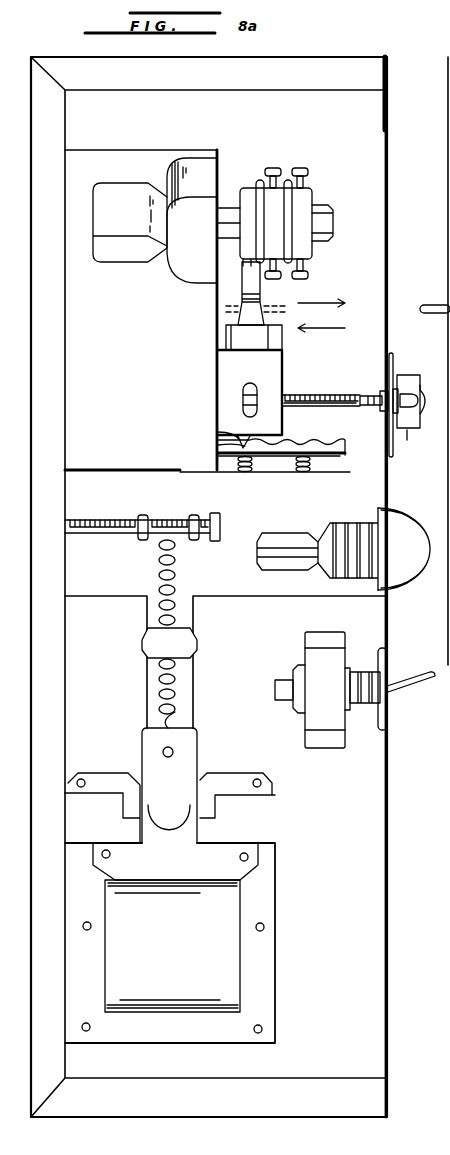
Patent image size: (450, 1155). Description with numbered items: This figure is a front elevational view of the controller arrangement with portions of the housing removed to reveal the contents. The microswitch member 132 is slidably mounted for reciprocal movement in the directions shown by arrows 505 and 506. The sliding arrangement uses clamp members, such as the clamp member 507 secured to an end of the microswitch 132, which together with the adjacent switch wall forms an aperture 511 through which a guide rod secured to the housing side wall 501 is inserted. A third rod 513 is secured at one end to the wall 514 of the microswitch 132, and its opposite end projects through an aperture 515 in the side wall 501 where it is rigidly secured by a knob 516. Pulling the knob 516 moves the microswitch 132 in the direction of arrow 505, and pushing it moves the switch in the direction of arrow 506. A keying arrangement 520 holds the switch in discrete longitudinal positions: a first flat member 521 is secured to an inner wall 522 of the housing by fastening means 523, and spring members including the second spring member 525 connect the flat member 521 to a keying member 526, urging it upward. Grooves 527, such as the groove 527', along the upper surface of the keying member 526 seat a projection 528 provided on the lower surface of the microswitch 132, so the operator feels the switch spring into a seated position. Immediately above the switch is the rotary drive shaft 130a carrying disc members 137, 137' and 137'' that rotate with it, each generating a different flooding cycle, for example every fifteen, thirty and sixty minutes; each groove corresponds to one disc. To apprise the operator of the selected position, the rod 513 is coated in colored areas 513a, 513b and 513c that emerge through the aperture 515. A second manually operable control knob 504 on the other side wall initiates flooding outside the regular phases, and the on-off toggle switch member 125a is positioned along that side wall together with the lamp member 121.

The disc member 137 is at (265, 212).
The disc member 137' is at (282, 211).
The disc member 137'' is at (320, 219).
The shaft 130a is at (333, 226).
The arrow 505 is at (312, 300).
The arrow 506 is at (320, 332).
The second manually operable control knob 504 is at (430, 304).
The side wall 501 is at (393, 357).
The clamp member 507 is at (244, 408).
The third rod 513 is at (292, 393).
The coated area 513a is at (383, 391).
The coated area 513b is at (380, 395).
The coated area 513c is at (320, 391).
The wall of microswitch 514 is at (230, 359).
The microswitch member 132 is at (243, 388).
The projection 528 is at (240, 428).
The groove 527 is at (206, 451).
The groove 527' is at (284, 434).
The aperture 515 is at (380, 412).
The keying member 526 is at (345, 453).
The inner wall 522 is at (148, 470).
The fastening means 523 is at (192, 475).
The first flat member 521 is at (240, 472).
The second spring member 525 is at (298, 472).
The keying arrangement 520 is at (343, 477).
The knob 516 is at (407, 440).
The aperture 511 is at (447, 405).
The lamp member 121 is at (405, 590).
The on-off toggle switch member 125a is at (407, 693).